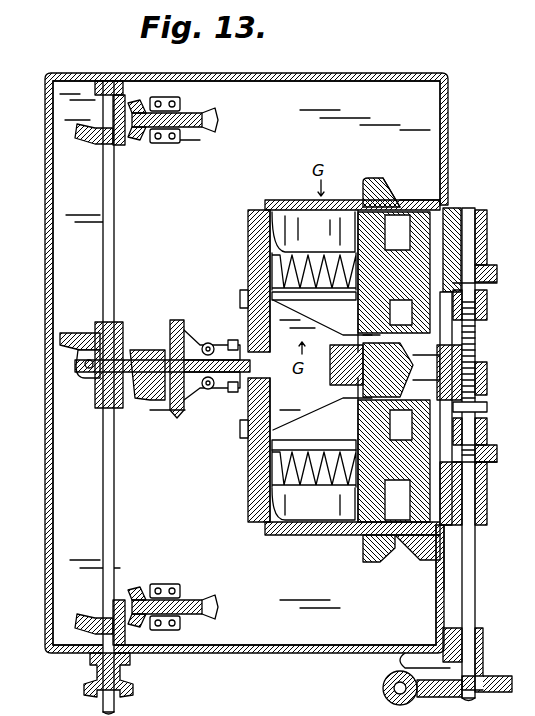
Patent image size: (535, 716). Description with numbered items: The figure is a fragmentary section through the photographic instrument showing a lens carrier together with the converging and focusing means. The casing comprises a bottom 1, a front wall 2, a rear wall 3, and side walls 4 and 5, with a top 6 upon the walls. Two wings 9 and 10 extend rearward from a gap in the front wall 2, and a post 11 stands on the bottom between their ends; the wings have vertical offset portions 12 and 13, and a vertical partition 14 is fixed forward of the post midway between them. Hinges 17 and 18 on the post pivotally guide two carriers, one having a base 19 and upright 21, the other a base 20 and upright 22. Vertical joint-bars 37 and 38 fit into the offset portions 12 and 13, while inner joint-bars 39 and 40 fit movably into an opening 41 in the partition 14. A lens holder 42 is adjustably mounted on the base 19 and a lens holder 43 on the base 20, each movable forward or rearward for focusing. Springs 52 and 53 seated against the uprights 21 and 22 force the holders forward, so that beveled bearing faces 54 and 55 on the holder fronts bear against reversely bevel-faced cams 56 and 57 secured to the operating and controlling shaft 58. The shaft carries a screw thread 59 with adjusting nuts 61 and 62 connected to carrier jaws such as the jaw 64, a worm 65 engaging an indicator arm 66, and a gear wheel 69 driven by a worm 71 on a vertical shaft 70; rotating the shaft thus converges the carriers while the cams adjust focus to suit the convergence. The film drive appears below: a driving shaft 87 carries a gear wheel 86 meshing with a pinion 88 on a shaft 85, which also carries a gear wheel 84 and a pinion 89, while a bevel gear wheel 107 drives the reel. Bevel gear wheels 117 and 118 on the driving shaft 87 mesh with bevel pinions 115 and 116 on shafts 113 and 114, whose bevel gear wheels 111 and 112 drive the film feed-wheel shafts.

The bottom 1 is at (75, 211).
The front wall 2 is at (449, 133).
The rear wall 3 is at (45, 507).
The side wall 4 is at (271, 653).
The side wall 5 is at (345, 73).
The top 6 is at (498, 284).
The wing 9 is at (310, 536).
The wing 10 is at (283, 200).
The post 11 is at (324, 374).
The vertical offset portion 12 is at (415, 548).
The vertical offset portion 13 is at (395, 200).
The vertical partition 14 is at (372, 369).
The hinge 17 is at (248, 428).
The hinge 18 is at (250, 305).
The base 19 is at (295, 512).
The base 20 is at (300, 218).
The upright 21 is at (250, 498).
The upright 22 is at (248, 236).
The joint-bar 37 is at (420, 555).
The joint-bar 38 is at (368, 192).
The joint-bar 39 is at (488, 408).
The joint-bar 40 is at (455, 345).
The opening 41 is at (345, 393).
The lens holder 42 is at (360, 545).
The lens holder 43 is at (458, 222).
The spring 52 is at (272, 522).
The spring 53 is at (268, 222).
The beveled bearing face 54 is at (463, 505).
The beveled bearing face 55 is at (488, 236).
The cam 56 is at (498, 460).
The cam 57 is at (498, 272).
The operating and controlling shaft 58 is at (478, 560).
The screw thread 59 is at (480, 452).
The adjusting nut 61 is at (488, 432).
The adjusting nut 62 is at (488, 300).
The jaw 64 is at (478, 330).
The worm 65 is at (488, 380).
The indicator arm 66 is at (465, 352).
The gear wheel 69 is at (500, 676).
The shaft 70 is at (382, 689).
The worm 71 is at (430, 698).
The gear wheel 84 is at (176, 320).
The shaft 85 is at (160, 398).
The gear wheel 86 is at (80, 333).
The driving shaft 87 is at (103, 438).
The pinion 88 is at (140, 382).
The pinion 89 is at (232, 340).
The bevel gear wheel 107 is at (86, 688).
The bevel gear wheel 111 is at (205, 600).
The bevel gear wheel 112 is at (204, 126).
The shaft 113 is at (202, 607).
The shaft 114 is at (165, 144).
The bevel pinion 115 is at (136, 592).
The bevel pinion 116 is at (137, 102).
The bevel gear wheel 117 is at (86, 618).
The bevel gear wheel 118 is at (88, 142).